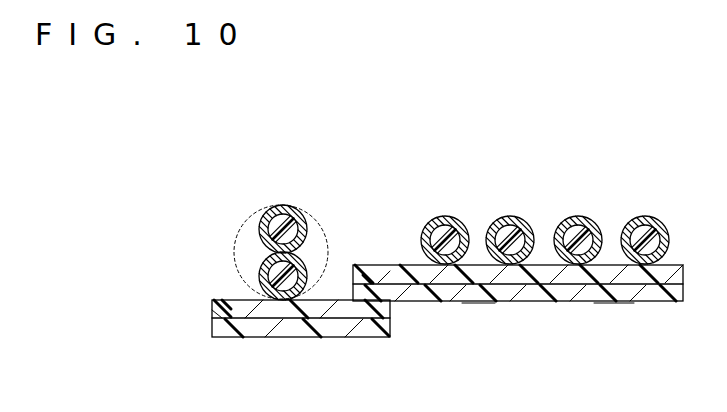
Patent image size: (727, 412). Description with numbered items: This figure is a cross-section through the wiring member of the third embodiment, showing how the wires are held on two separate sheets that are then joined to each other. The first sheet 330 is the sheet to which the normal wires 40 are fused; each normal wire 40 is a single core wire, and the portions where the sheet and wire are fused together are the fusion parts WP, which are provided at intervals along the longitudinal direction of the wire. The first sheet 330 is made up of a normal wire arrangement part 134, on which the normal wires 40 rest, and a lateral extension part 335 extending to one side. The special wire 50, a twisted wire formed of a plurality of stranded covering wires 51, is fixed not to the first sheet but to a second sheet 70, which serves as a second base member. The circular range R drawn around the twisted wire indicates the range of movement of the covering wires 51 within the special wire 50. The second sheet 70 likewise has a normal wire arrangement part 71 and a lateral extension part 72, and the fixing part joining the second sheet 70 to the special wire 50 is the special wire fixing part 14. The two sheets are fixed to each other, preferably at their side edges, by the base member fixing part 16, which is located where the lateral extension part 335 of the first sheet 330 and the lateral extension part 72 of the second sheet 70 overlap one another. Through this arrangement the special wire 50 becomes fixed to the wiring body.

The special wire 50 is at (187, 180).
The covering wire 51 is at (260, 224).
The circular range R is at (310, 209).
The normal wire arrangement part 71 is at (222, 299).
The second sheet 70 is at (226, 337).
The special wire fixing part 14 is at (281, 337).
The lateral extension part 72 is at (366, 337).
The base member fixing part 16 is at (373, 265).
The lateral extension part 335 is at (409, 265).
The normal wire 40 is at (628, 222).
The normal wire arrangement part 134 is at (541, 265).
The first sheet 330 is at (541, 303).
The fusion part WP is at (634, 303).